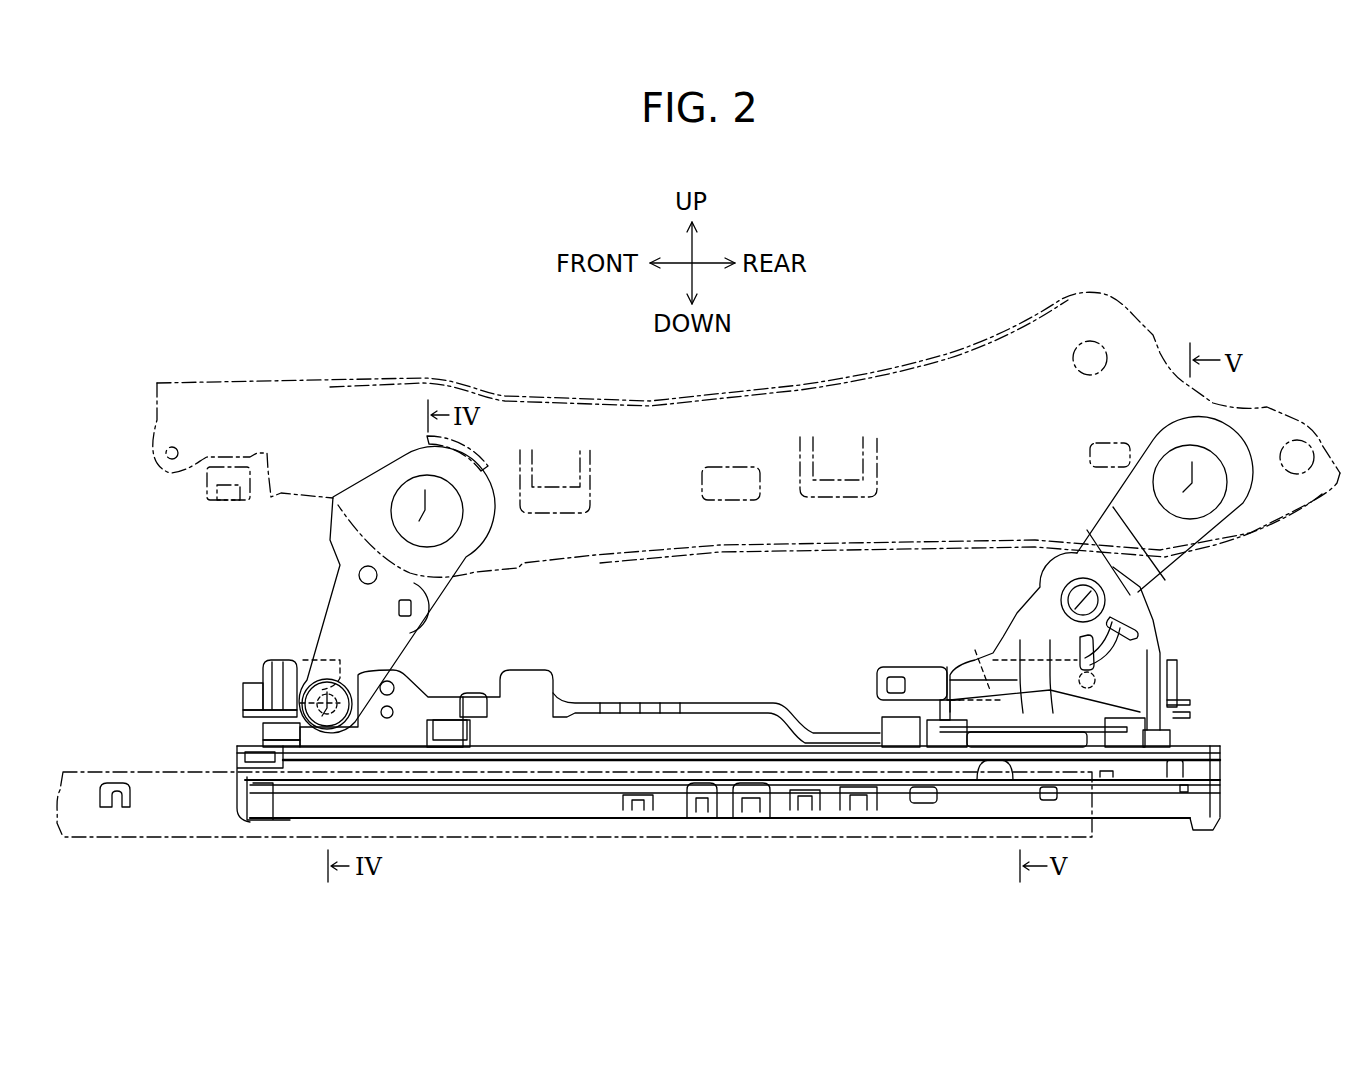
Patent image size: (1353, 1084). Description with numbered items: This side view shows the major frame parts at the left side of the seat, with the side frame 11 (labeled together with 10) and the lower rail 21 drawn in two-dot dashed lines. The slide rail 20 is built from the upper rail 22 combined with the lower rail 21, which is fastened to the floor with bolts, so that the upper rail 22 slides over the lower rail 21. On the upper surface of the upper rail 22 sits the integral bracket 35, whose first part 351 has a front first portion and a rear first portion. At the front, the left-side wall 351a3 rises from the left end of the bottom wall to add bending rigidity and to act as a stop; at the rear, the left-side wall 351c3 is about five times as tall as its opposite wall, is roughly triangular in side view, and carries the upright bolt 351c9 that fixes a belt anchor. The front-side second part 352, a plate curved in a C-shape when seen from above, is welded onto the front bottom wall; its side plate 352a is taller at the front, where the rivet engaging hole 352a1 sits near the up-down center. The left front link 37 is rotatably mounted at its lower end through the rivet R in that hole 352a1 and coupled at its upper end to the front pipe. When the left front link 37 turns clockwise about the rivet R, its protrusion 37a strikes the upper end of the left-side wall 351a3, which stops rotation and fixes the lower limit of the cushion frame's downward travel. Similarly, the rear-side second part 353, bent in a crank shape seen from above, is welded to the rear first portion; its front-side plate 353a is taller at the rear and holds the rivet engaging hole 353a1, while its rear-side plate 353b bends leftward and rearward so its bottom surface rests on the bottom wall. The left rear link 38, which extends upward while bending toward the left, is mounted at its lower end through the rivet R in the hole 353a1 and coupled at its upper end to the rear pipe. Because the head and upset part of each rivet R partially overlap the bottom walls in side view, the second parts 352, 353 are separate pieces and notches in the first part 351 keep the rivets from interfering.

The seat 10 is at (746, 434).
The seat cushion frame 11 is at (302, 382).
The slide rail 20 is at (1234, 797).
The lower rail 21 is at (160, 813).
The upper rail 22 is at (540, 800).
The integral bracket 35 is at (671, 689).
The first part 351 is at (741, 701).
The left-side wall 351a3 is at (474, 693).
The left-side wall 351c3 is at (1167, 653).
The bolt 351c9 is at (1066, 592).
The front-side second part 352 is at (263, 672).
The side plate 352a is at (404, 716).
The rivet engaging hole 352a1 is at (300, 703).
The rear-side second part 353 is at (897, 667).
The front-side plate 353a is at (917, 667).
The rivet engaging hole 353a1 is at (988, 680).
The rear-side plate 353b is at (1140, 633).
The left front link 37 is at (330, 598).
The protrusion 37a is at (420, 614).
The left rear link 38 is at (1148, 572).
The rivet R is at (315, 688).